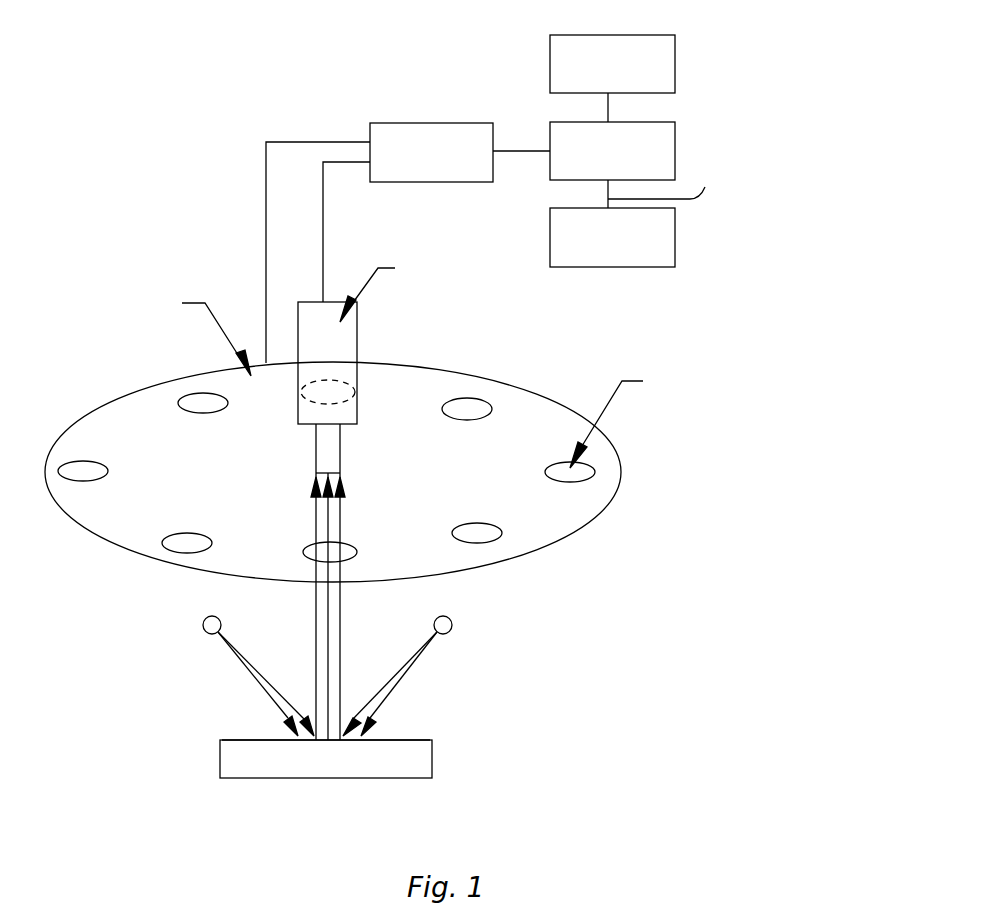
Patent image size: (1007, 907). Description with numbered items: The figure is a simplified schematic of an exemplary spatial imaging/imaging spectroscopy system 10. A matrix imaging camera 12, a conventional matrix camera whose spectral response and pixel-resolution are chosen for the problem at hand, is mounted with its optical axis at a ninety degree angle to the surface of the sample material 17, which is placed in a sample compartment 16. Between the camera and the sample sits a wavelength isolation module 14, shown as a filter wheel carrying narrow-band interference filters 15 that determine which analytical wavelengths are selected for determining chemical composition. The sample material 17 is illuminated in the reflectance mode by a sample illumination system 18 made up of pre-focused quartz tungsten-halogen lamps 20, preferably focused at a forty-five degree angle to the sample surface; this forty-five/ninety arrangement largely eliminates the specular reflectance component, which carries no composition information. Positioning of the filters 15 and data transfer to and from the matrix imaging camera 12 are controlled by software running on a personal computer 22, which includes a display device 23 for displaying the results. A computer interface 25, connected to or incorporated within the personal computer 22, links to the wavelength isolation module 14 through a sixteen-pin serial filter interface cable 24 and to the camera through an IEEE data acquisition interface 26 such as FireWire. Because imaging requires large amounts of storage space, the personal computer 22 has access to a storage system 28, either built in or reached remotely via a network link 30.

The spatial imaging/imaging spectroscopy system 10 is at (271, 58).
The matrix imaging camera 12 is at (357, 341).
The wavelength isolation module 14 is at (100, 411).
The narrow-band interference filter 15 is at (200, 410).
The sample compartment 16 is at (220, 757).
The sample material 17 is at (277, 762).
The sample illumination system 18 is at (380, 656).
The quartz tungsten-halogen lamp 20 is at (222, 622).
The personal computer 22 is at (550, 129).
The display device 23 is at (550, 42).
The filter interface cable 24 is at (266, 180).
The computer interface 25 is at (370, 131).
The data acquisition interface 26 is at (323, 246).
The storage system 28 is at (550, 215).
The network link 30 is at (664, 183).